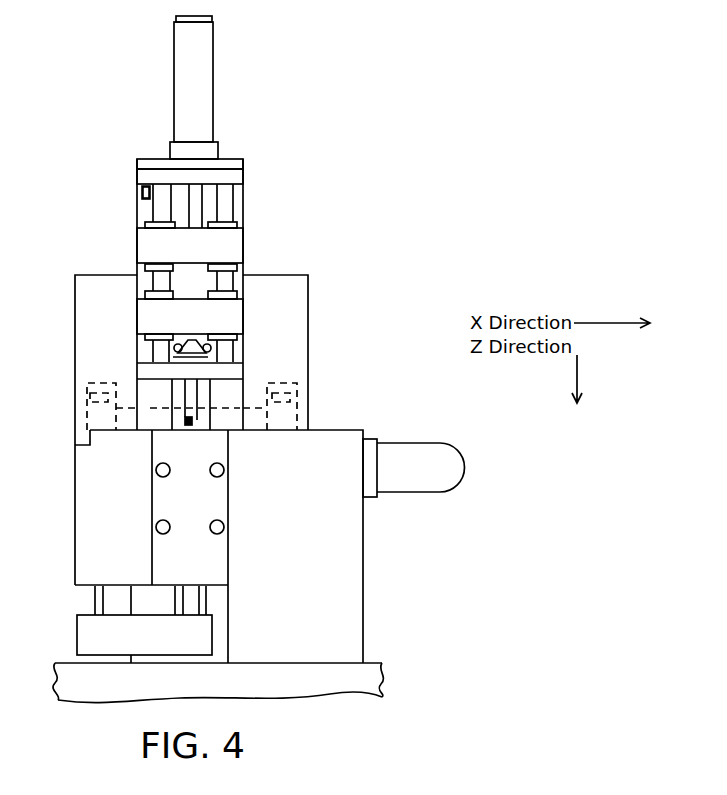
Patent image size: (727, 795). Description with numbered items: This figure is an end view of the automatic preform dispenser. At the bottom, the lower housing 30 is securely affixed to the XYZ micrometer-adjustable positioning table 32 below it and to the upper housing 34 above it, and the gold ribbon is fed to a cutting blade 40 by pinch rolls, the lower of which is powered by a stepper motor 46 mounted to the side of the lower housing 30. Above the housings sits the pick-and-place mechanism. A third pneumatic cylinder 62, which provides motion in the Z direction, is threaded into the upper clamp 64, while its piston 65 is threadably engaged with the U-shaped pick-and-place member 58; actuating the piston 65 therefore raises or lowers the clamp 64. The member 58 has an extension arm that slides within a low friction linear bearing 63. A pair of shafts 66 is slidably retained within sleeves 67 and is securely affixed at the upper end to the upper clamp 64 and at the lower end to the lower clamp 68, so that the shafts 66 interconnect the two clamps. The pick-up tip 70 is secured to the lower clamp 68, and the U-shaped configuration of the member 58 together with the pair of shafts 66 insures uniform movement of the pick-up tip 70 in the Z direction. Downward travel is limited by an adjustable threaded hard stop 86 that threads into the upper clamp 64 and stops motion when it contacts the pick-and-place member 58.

The lower housing 30 is at (363, 582).
The XYZ micrometer-adjustable positioning table 32 is at (386, 676).
The upper housing 34 is at (75, 343).
The cutting blade 40 is at (207, 602).
The stepper motor 46 is at (406, 443).
The pick-and-place member 58 is at (243, 242).
The third pneumatic cylinder 62 is at (210, 85).
The low friction linear bearing 63 is at (145, 344).
The upper clamp 64 is at (245, 173).
The piston 65 is at (197, 202).
The shaft 66 is at (160, 357).
The sleeve 67 is at (148, 221).
The lower clamp 68 is at (233, 373).
The pick-up tip 70 is at (228, 423).
The adjustable threaded hard stop 86 is at (137, 183).